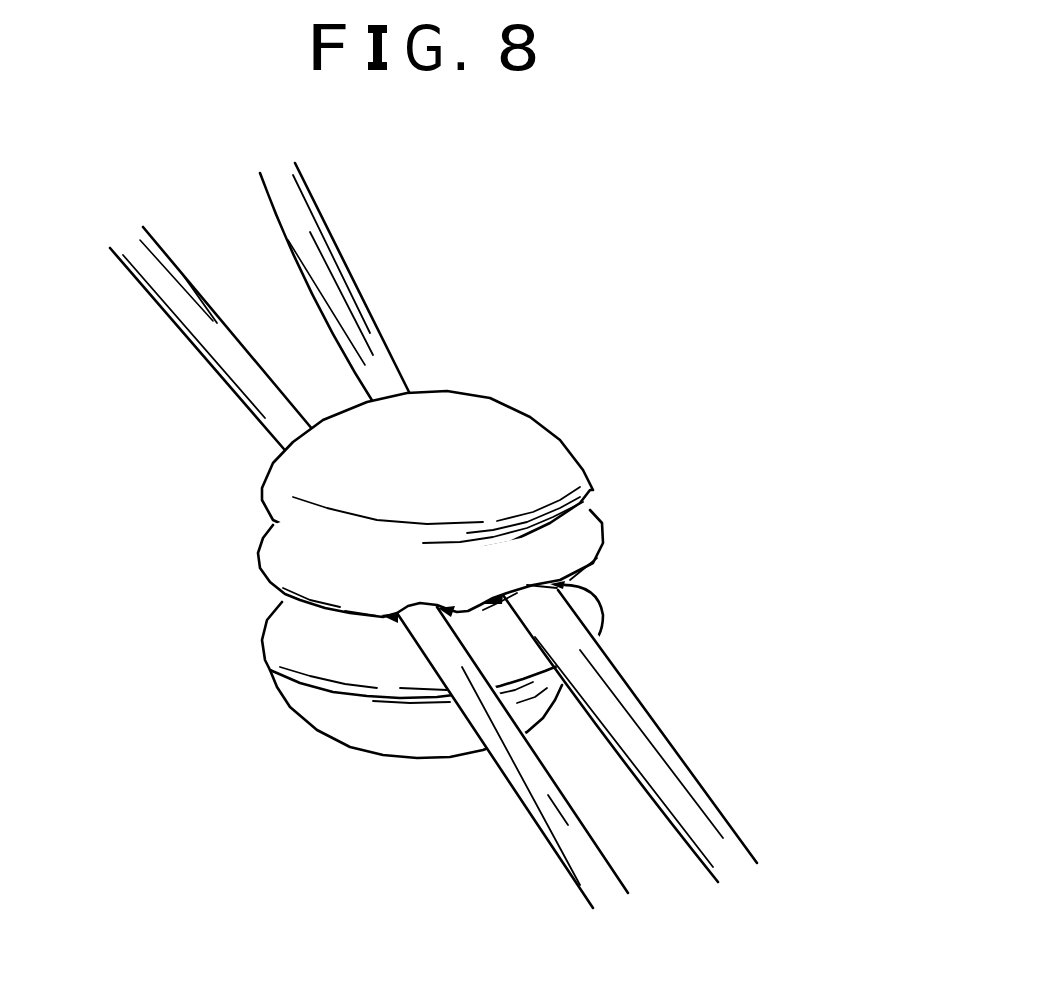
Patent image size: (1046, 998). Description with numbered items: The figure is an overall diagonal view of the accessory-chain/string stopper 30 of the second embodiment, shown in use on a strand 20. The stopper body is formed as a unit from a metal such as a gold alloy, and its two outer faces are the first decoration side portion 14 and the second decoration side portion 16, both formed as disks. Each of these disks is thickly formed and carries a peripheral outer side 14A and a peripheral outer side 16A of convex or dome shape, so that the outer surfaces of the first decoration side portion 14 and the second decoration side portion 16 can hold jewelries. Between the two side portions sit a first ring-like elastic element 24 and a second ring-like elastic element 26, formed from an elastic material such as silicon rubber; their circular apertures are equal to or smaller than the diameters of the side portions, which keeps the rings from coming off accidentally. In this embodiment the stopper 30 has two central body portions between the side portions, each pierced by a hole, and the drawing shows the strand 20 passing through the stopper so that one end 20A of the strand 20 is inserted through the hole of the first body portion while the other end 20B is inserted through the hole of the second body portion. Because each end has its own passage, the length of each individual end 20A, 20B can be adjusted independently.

The first decoration side portion 14 is at (482, 445).
The peripheral outer side 14A is at (492, 418).
The second decoration side portion 16 is at (407, 740).
The peripheral outer side 16A is at (345, 714).
The strand 20 is at (549, 845).
The end of the strand 20A is at (192, 317).
The another end of the strand 20B is at (338, 276).
The first ring-like elastic element 24 is at (593, 537).
The second ring-like elastic element 26 is at (603, 613).
The accessory-chain/string stopper 30 is at (654, 278).